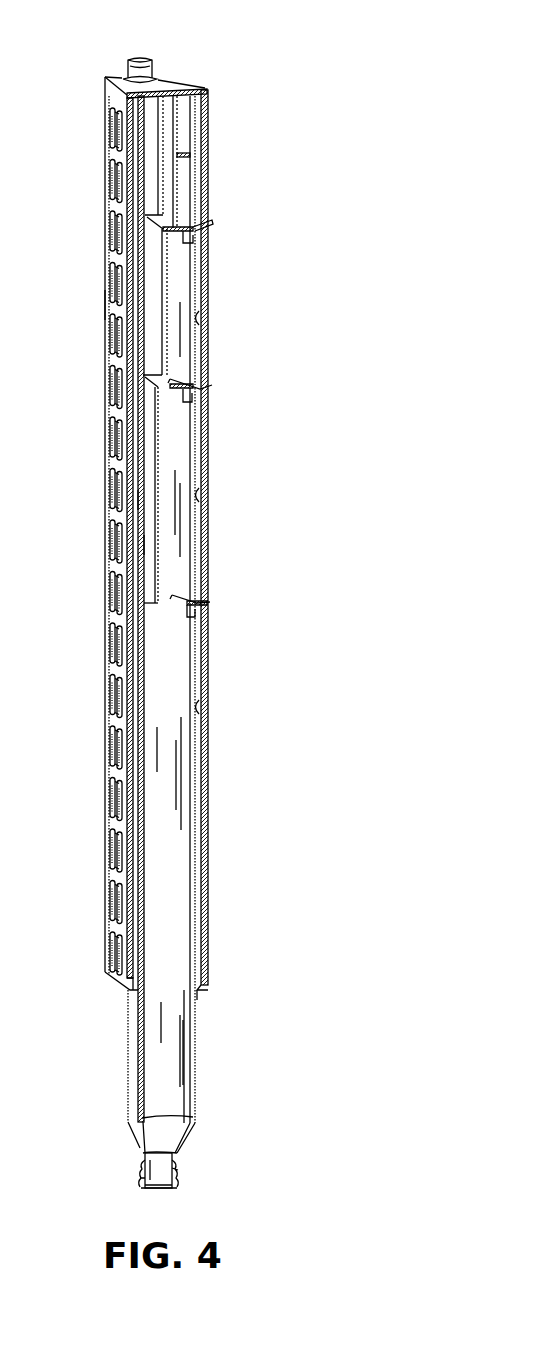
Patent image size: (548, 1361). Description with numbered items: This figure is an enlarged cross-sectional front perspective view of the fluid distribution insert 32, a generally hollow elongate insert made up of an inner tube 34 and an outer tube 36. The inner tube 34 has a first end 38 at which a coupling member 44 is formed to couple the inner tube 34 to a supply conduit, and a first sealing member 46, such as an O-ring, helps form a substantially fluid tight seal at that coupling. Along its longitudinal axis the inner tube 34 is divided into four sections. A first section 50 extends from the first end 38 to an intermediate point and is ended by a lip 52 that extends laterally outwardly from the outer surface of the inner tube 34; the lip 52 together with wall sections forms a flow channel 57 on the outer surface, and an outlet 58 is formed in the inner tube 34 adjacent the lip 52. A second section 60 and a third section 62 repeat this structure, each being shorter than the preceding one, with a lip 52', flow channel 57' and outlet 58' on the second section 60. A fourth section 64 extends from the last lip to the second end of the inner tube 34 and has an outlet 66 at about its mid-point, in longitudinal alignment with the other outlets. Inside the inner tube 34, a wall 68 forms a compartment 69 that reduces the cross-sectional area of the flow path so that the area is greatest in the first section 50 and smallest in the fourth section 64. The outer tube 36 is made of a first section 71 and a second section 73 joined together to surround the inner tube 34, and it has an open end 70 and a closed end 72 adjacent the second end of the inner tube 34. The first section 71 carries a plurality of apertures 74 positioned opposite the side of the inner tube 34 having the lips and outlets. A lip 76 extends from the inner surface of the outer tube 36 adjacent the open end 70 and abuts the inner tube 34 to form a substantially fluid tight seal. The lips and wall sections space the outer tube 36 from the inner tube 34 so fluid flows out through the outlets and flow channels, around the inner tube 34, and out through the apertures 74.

The fluid distribution insert 32 is at (78, 315).
The inner tube 34 is at (118, 1099).
The outer tube 36 is at (110, 72).
The first end 38 is at (144, 1154).
The coupling member 44 is at (172, 1188).
The first sealing member 46 is at (176, 1178).
The first section 50 is at (192, 657).
The lip 52 is at (217, 592).
The lip 52' is at (219, 376).
The flow channel 57 is at (230, 710).
The flow channel 57' is at (233, 498).
The outlet 58 is at (225, 620).
The outlet 58' is at (226, 403).
The second section 60 is at (197, 535).
The third section 62 is at (192, 290).
The fourth section 64 is at (194, 187).
The outlet 66 is at (190, 155).
The wall 68 is at (140, 544).
The compartment 69 is at (138, 502).
The open end 70 is at (130, 991).
The first section 71 is at (105, 92).
The closed end 72 is at (155, 85).
The second section 73 is at (208, 103).
The apertures 74 is at (110, 633).
The lip 76 is at (204, 988).